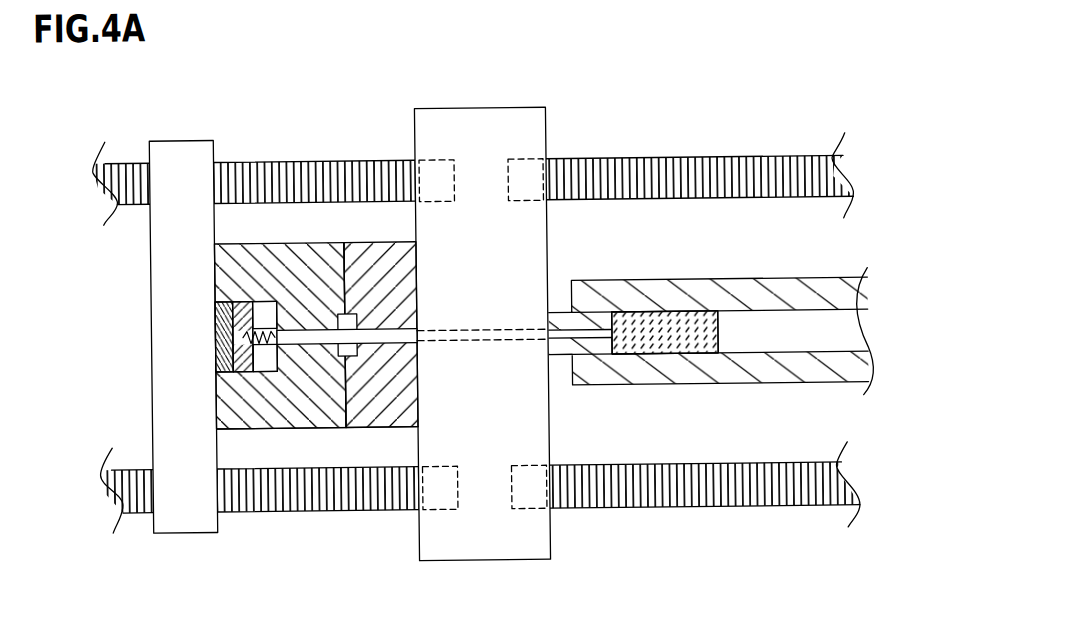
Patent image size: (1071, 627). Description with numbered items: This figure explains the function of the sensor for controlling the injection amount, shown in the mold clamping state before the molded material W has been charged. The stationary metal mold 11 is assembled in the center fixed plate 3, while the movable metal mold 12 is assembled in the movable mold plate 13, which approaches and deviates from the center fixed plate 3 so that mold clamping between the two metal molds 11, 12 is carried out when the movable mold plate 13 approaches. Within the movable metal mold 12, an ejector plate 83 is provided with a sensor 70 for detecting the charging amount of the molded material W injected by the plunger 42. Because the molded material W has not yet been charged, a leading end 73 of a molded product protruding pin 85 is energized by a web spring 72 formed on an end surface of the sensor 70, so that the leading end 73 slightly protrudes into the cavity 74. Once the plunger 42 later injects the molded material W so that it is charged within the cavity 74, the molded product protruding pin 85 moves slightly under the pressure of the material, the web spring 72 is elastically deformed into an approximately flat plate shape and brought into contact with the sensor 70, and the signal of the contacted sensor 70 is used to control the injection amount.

The center fixed plate 3 is at (482, 118).
The stationary metal mold 11 is at (398, 428).
The movable metal mold 12 is at (292, 428).
The movable mold plate 13 is at (190, 144).
The plunger 42 is at (752, 328).
The sensor 70 is at (217, 335).
The web spring 72 is at (240, 428).
The leading end 73 is at (357, 314).
The cavity 74 is at (332, 428).
The ejector plate 83 is at (217, 312).
The molded product protruding pin 85 is at (298, 320).
The molded material W is at (640, 319).